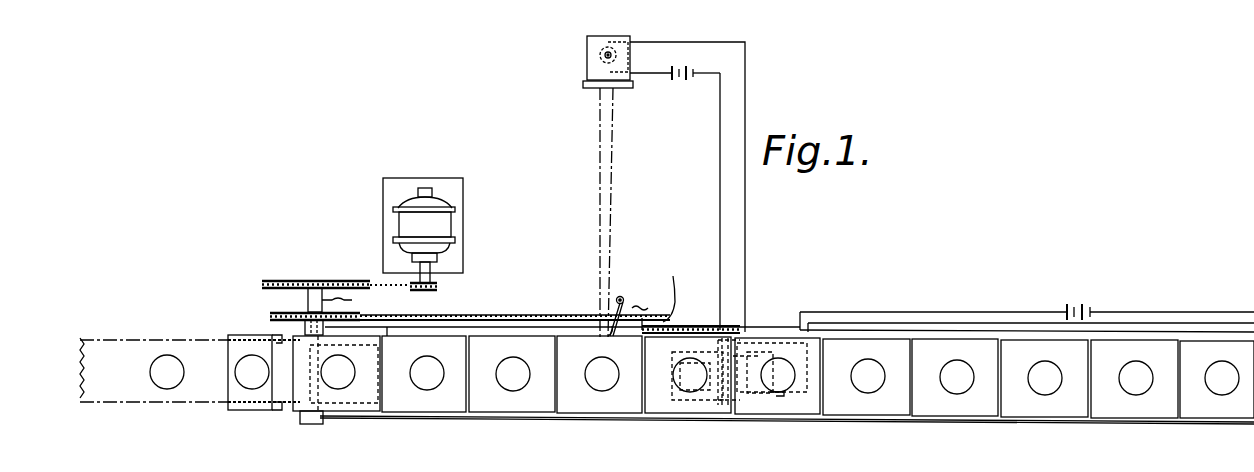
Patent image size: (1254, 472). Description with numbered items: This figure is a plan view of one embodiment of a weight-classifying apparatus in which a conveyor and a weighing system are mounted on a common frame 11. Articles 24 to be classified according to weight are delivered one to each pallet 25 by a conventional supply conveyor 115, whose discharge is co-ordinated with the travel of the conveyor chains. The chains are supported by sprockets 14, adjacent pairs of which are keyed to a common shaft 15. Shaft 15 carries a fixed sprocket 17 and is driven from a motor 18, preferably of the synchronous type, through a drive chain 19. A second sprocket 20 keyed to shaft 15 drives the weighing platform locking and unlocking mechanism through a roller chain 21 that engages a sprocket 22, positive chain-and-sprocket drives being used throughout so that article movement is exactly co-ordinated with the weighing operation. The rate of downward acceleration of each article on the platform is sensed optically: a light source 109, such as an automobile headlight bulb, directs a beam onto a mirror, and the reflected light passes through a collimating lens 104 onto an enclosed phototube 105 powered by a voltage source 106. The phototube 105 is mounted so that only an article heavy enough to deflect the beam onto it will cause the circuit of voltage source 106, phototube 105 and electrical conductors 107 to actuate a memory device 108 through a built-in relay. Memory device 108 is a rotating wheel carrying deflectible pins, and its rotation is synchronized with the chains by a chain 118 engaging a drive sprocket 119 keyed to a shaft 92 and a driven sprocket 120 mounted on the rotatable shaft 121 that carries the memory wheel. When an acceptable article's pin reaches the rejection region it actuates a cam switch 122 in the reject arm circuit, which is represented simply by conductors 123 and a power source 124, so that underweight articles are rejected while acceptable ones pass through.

The common frame 11 is at (576, 413).
The sprocket 14 is at (272, 336).
The shaft 15 is at (342, 300).
The sprocket 17 is at (302, 280).
The motor 18 is at (444, 224).
The drive chain 19 is at (386, 284).
The sprocket 20 is at (286, 314).
The roller chain 21 is at (506, 317).
The sprocket 22 is at (673, 289).
The articles 24 is at (168, 372).
The pallets 25 is at (656, 400).
The shaft 92 is at (641, 307).
The collimating lens 104 is at (590, 88).
The phototube 105 is at (590, 54).
The voltage source 106 is at (680, 86).
The electrical conductors 107 is at (720, 212).
The memory device 108 is at (738, 352).
The light source 109 is at (624, 300).
The conveyor 115 is at (140, 402).
The chain 118 is at (701, 326).
The drive sprocket 119 is at (620, 330).
The driven sprocket 120 is at (732, 332).
The rotatable shaft 121 is at (712, 414).
The cam switch 122 is at (790, 397).
The conductors 123 is at (1036, 324).
The power source 124 is at (1106, 312).